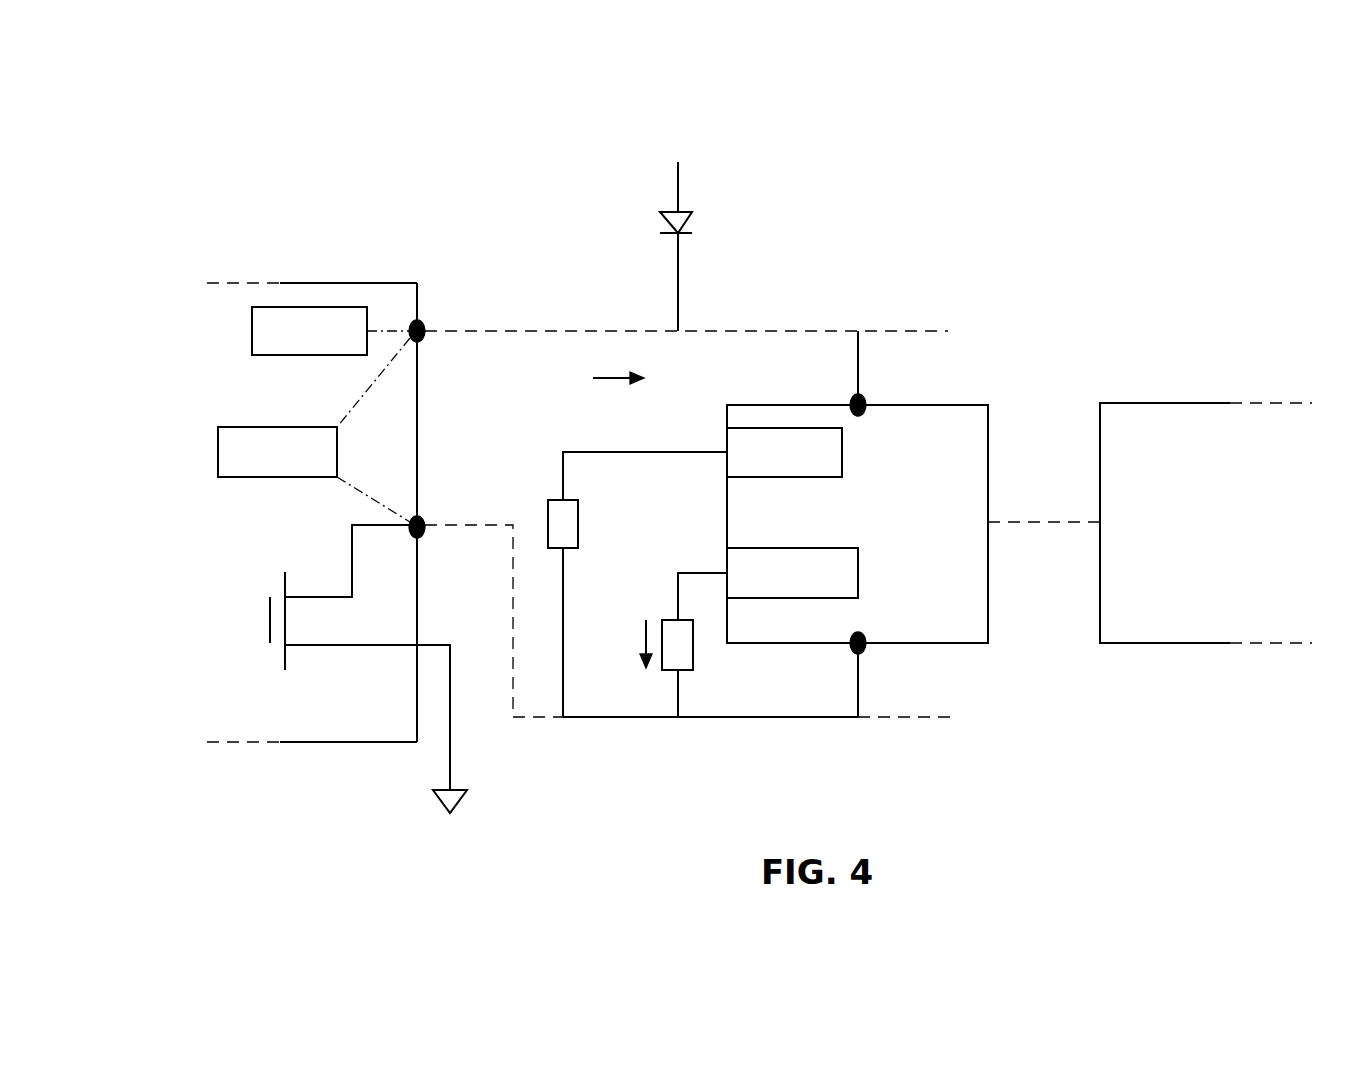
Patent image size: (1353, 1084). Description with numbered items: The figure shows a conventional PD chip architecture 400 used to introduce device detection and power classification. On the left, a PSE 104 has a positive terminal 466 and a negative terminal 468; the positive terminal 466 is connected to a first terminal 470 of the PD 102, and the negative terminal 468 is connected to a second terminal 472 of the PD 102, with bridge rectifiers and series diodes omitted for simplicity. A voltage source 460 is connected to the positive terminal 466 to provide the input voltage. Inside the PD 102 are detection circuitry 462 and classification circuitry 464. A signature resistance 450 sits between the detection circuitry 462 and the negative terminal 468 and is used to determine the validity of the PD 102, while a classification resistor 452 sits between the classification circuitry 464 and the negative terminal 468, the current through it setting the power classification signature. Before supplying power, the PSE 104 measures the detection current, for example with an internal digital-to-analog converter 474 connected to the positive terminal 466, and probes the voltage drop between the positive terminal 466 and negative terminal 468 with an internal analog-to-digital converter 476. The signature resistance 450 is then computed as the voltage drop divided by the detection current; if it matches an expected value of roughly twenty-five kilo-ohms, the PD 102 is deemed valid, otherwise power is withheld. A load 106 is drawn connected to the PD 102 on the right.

The PD chip architecture 400 is at (1195, 133).
The PSE 104 is at (333, 283).
The IDAC current digital-to-analog converter 474 is at (252, 329).
The analog-to-digital converter 476 is at (218, 451).
The positive terminal 466 is at (424, 339).
The negative terminal 468 is at (425, 538).
The voltage source 460 is at (693, 150).
The signature resistance 450 is at (578, 522).
The classification resistor 452 is at (695, 663).
The detection circuitry 462 is at (770, 477).
The classification circuitry 464 is at (858, 573).
The first terminal 470 is at (860, 416).
The second terminal 472 is at (865, 660).
The PD 102 is at (953, 403).
The load 106 is at (1198, 403).